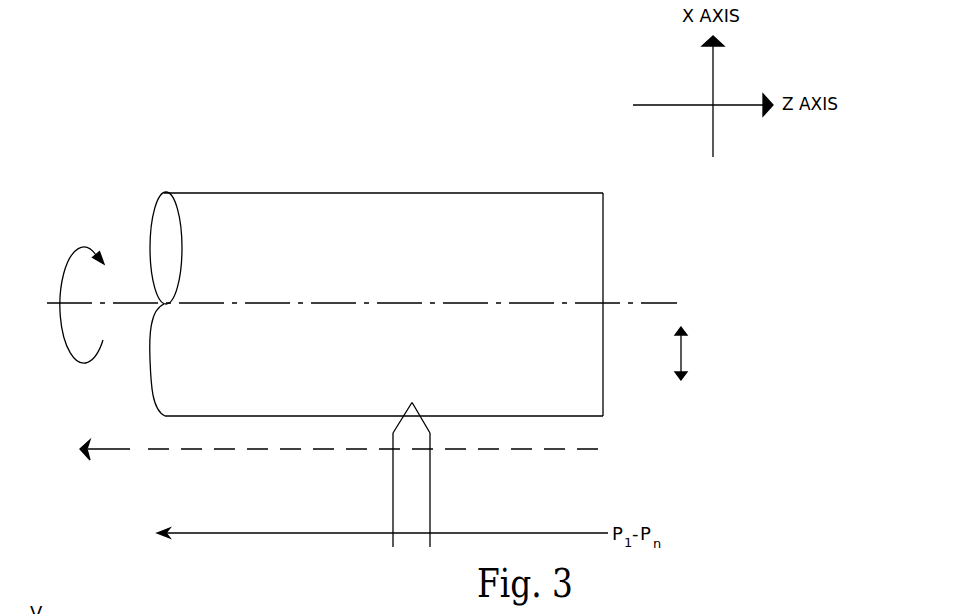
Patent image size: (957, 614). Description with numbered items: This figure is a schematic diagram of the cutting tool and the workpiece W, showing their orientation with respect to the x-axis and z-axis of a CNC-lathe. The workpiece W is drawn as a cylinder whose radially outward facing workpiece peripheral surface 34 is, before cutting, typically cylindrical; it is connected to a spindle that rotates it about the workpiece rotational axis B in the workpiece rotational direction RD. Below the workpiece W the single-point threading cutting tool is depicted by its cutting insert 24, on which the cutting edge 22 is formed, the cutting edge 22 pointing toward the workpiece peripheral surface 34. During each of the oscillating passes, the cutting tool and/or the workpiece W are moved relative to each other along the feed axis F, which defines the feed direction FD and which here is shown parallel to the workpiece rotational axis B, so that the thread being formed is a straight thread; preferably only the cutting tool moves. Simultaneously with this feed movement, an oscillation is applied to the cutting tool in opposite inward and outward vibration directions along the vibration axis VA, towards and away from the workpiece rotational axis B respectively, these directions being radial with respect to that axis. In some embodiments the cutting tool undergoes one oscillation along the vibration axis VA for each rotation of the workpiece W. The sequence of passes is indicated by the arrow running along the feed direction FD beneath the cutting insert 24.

The cutting edge 22 is at (416, 408).
The cutting insert 24 is at (403, 467).
The workpiece peripheral surface 34 is at (465, 247).
The workpiece W is at (362, 269).
The workpiece rotational axis B is at (138, 303).
The feed axis F is at (577, 449).
The workpiece rotational direction RD is at (69, 305).
The feed direction FD is at (105, 464).
The vibration axis VA is at (680, 352).